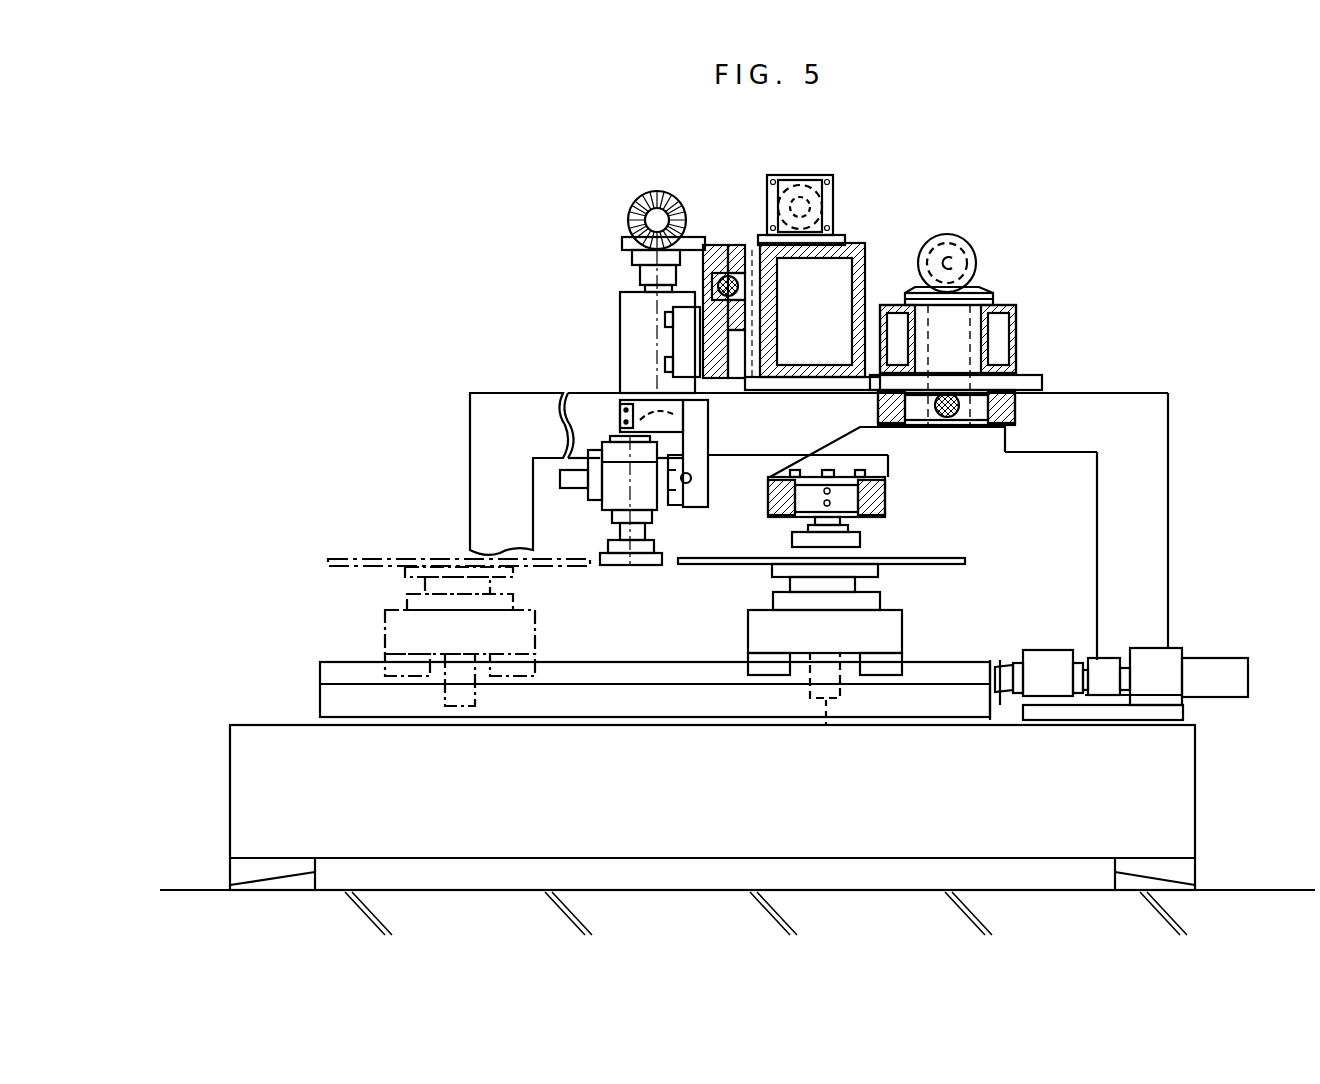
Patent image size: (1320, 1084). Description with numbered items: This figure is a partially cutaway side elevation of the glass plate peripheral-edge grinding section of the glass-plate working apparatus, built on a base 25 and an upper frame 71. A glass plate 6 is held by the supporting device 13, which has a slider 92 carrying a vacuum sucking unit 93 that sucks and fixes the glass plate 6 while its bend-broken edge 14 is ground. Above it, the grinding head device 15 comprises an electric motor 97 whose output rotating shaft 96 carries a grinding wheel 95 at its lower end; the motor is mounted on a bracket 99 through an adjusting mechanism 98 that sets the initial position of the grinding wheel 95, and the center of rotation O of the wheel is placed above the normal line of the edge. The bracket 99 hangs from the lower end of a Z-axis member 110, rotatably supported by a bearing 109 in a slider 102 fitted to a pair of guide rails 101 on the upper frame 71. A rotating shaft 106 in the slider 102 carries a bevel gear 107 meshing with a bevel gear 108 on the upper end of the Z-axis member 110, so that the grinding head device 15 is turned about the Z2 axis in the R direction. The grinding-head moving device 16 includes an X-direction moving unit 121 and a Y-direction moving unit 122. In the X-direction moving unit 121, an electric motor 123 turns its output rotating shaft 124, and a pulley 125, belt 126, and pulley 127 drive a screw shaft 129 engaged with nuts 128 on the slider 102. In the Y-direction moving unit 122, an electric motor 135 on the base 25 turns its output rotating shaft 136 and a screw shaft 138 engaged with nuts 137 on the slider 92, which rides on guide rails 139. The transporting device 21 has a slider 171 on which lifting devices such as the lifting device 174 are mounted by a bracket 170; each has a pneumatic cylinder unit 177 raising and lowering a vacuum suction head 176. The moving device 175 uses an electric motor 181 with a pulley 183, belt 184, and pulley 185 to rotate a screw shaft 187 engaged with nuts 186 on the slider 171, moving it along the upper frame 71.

The glass plate 6 is at (965, 560).
The supporting device 13 is at (915, 607).
The bend-broken edge 14 is at (680, 566).
The grinding head device 15 is at (570, 510).
The grinding-head moving device 16 is at (1200, 655).
The transporting device 21 is at (1000, 280).
The base 25 is at (1195, 742).
The upper frame 71 is at (1015, 305).
The slider 92 is at (535, 623).
The vacuum sucking unit 93 is at (868, 576).
The grinding wheel 95 is at (640, 565).
The output rotating shaft 96 is at (633, 548).
The electric motor 97 is at (650, 500).
The adjusting mechanism 98 is at (691, 478).
The bracket 99 is at (708, 435).
The guide rails 101 is at (735, 255).
The slider 102 is at (665, 345).
The rotating shaft 106 is at (632, 207).
The bevel gear 107 is at (657, 191).
The bevel gear 108 is at (625, 243).
The bearing 109 is at (626, 303).
The Z-axis member 110 is at (683, 403).
The X-direction moving unit 121 is at (865, 232).
The Y-direction moving unit 122 is at (1180, 648).
The electric motor 123 is at (820, 178).
The output rotating shaft 124 is at (788, 172).
The pulley 125 is at (838, 198).
The belt 126 is at (785, 272).
The pulley 127 is at (762, 298).
The nuts 128 is at (665, 318).
The screw shaft 129 is at (730, 275).
The electric motor 135 is at (1250, 665).
The output rotating shaft 136 is at (1122, 668).
The nuts 137 is at (830, 733).
The screw shaft 138 is at (1000, 665).
The guide rails 139 is at (642, 700).
The bracket 170 is at (975, 497).
The slider 171 is at (1018, 410).
The lifting device 174 is at (896, 512).
The moving device 175 is at (790, 517).
The vacuum suction head 176 is at (860, 540).
The pneumatic cylinder unit 177 is at (1012, 380).
The electric motor 181 is at (975, 252).
The pulley 183 is at (960, 240).
The belt 184 is at (975, 332).
The pulley 185 is at (962, 425).
The nuts 186 is at (932, 428).
The screw shaft 187 is at (947, 425).
The R direction R is at (620, 410).
The center of rotation O is at (625, 528).
The Z2 axis Z2 is at (640, 272).